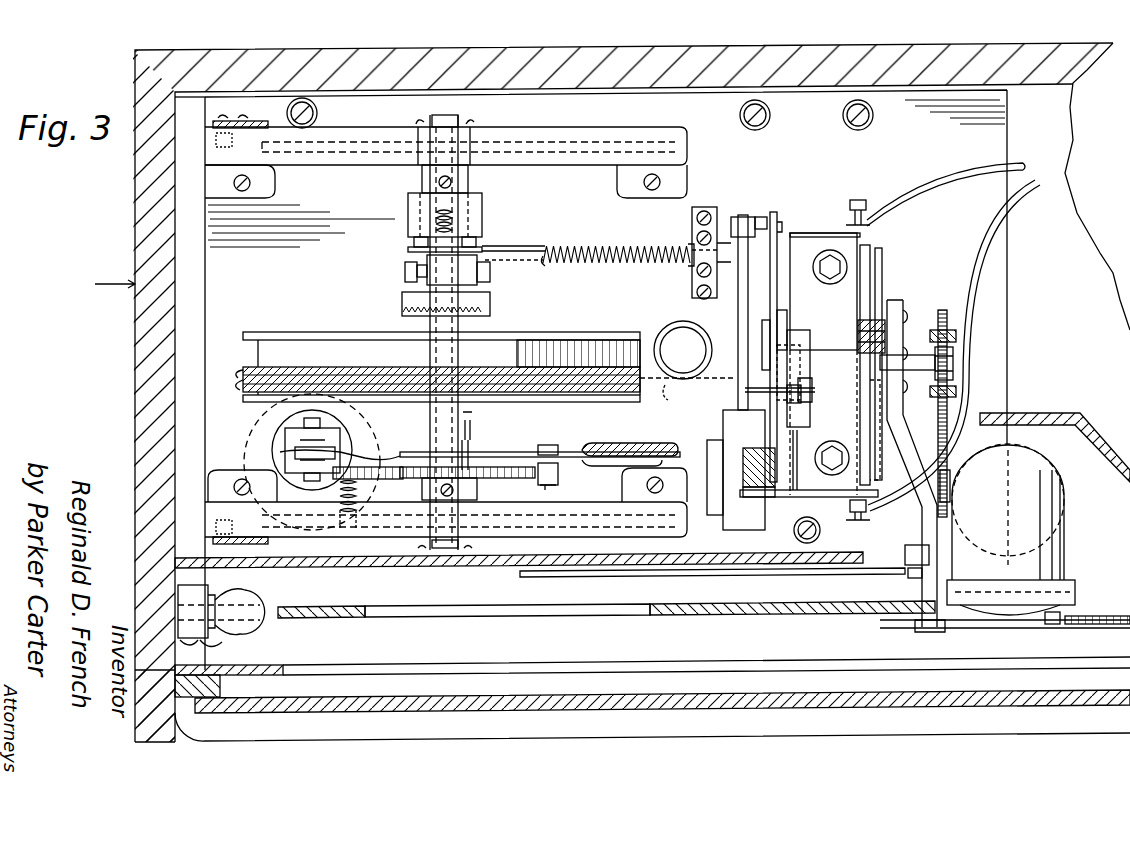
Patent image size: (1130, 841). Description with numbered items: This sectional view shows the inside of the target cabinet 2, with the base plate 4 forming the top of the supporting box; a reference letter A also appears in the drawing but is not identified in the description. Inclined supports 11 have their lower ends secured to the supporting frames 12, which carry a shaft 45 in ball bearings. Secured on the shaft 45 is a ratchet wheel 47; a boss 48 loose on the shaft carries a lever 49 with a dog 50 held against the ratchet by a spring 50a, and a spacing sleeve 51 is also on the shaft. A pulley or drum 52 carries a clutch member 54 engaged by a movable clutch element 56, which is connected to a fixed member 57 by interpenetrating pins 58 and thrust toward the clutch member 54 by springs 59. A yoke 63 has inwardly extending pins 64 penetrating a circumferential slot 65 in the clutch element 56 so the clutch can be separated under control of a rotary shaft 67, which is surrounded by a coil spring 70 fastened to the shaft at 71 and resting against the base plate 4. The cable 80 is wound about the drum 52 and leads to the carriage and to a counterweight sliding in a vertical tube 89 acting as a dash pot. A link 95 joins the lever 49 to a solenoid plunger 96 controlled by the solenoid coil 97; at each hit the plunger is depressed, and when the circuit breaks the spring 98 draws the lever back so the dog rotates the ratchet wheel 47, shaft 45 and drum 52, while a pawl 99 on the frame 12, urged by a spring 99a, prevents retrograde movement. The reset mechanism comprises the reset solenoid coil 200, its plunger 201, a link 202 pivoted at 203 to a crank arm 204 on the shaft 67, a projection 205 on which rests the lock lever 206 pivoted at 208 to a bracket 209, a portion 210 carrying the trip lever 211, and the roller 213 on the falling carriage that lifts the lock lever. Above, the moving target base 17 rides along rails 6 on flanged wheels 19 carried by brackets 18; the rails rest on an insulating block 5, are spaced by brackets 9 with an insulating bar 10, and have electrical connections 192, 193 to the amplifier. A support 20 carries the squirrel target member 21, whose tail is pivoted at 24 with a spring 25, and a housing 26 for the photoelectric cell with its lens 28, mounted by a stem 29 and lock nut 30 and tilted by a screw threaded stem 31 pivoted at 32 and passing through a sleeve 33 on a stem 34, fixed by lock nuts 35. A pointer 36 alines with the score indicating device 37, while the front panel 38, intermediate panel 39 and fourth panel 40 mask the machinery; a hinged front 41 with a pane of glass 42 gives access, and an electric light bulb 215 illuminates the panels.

The target cabinet 2 is at (252, 30).
The base plate 4 is at (230, 226).
The viewing direction arrow A is at (100, 286).
The insulating block 5 is at (815, 497).
The rails 6 is at (870, 240).
The brackets 9 is at (799, 238).
The connecting insulating bar 10 is at (725, 462).
The inclined supports 11 is at (268, 130).
The supporting frames 12 is at (385, 118).
The moving target base 17 is at (885, 300).
The bracket 18 is at (852, 242).
The wheel 19 is at (882, 253).
The support 20 is at (922, 521).
The target member 21 is at (947, 626).
The pivot 24 is at (1051, 625).
The spring 25 is at (1105, 625).
The housing 26 is at (1073, 560).
The lens 28 is at (1008, 608).
The stem 29 is at (905, 557).
The lock nut 30 is at (910, 573).
The screw threaded stem 31 is at (940, 423).
The pivot 32 is at (950, 500).
The sleeve 33 is at (955, 362).
The stem 34 is at (919, 340).
The lock nuts 35 is at (947, 330).
The pointer 36 is at (608, 576).
The score indicating device 37 is at (506, 566).
The front panel 38 is at (283, 675).
The intermediate panel 39 is at (360, 618).
The fourth panel 40 is at (1088, 432).
The hinged front 41 is at (456, 738).
The pane of glass 42 is at (574, 712).
The shaft 45 is at (458, 108).
The ratchet wheel 47 is at (495, 479).
The boss 48 is at (466, 448).
The lever 49 is at (514, 452).
The dog 50 is at (557, 485).
The spring 50a is at (556, 468).
The spacing sleeve 51 is at (471, 432).
The drum 52 is at (322, 330).
The clutch member 54 is at (405, 312).
The movable clutch element 56 is at (402, 302).
The fixed member 57 is at (482, 205).
The interpenetrating pins 58 is at (410, 247).
The springs 59 is at (480, 240).
The yoke 63 is at (417, 268).
The inwardly extending pins 64 is at (405, 274).
The circumferential slot 65 is at (426, 284).
The rotary shaft 67 is at (530, 252).
The coil spring 70 is at (627, 250).
The fastening point 71 is at (545, 262).
The cable 80 is at (256, 372).
The vertical tube 89 is at (671, 323).
The link 95 is at (332, 455).
The solenoid plunger 96 is at (322, 440).
The solenoid coil 97 is at (243, 428).
The spring 98 is at (606, 443).
The pawl 99 is at (375, 479).
The spring 99a is at (358, 492).
The electrical connection 192 is at (968, 280).
The electrical connection 193 is at (918, 185).
The reset solenoid coil 200 is at (713, 505).
The solenoid plunger 201 is at (745, 390).
The link 202 is at (744, 312).
The pivot 203 is at (734, 215).
The crank arm 204 is at (748, 213).
The projection 205 is at (764, 215).
The lock lever 206 is at (778, 220).
The pivot 208 is at (766, 325).
The bracket 209 is at (787, 316).
The portion 210 is at (792, 380).
The trip lever 211 is at (800, 396).
The roller 213 is at (805, 334).
The electric light bulb 215 is at (262, 628).